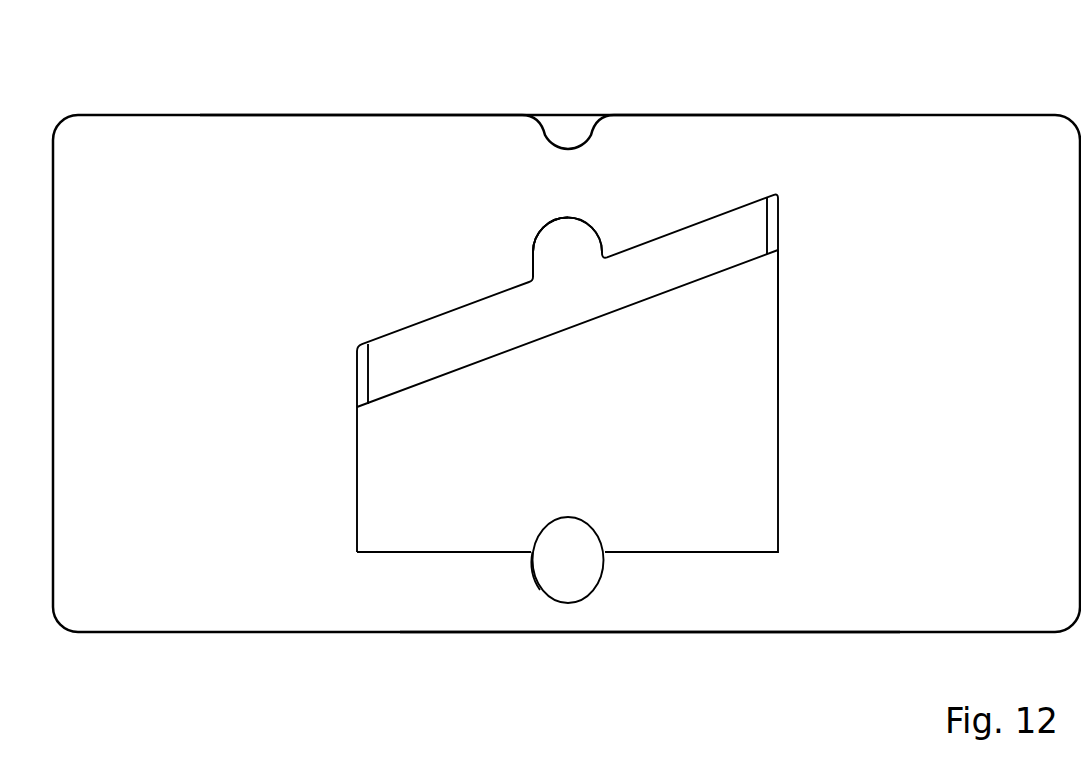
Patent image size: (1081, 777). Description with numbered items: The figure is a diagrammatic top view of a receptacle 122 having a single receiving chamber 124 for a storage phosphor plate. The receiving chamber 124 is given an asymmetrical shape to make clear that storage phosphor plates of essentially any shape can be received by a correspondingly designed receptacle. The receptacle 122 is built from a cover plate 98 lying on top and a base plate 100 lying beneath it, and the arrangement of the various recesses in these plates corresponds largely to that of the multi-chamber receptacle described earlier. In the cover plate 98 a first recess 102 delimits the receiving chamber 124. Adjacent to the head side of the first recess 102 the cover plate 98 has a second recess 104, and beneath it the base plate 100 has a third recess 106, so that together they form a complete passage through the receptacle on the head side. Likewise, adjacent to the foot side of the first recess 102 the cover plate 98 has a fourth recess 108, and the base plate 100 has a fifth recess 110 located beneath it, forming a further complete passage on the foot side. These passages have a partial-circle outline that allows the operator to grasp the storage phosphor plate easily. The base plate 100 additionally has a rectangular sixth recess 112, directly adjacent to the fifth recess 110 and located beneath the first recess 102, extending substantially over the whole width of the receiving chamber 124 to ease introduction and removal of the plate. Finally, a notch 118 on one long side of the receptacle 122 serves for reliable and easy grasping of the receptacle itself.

The cover plate 98 is at (993, 130).
The base plate 100 is at (856, 114).
The first recess 102 is at (770, 493).
The second recess 104 is at (593, 578).
The third recess 106 is at (536, 586).
The fourth recess 108 is at (548, 240).
The fifth recess 110 is at (590, 219).
The sixth recess 112 is at (398, 348).
The notch 118 is at (568, 126).
The receptacle 122 is at (661, 642).
The receiving chamber 124 is at (779, 318).